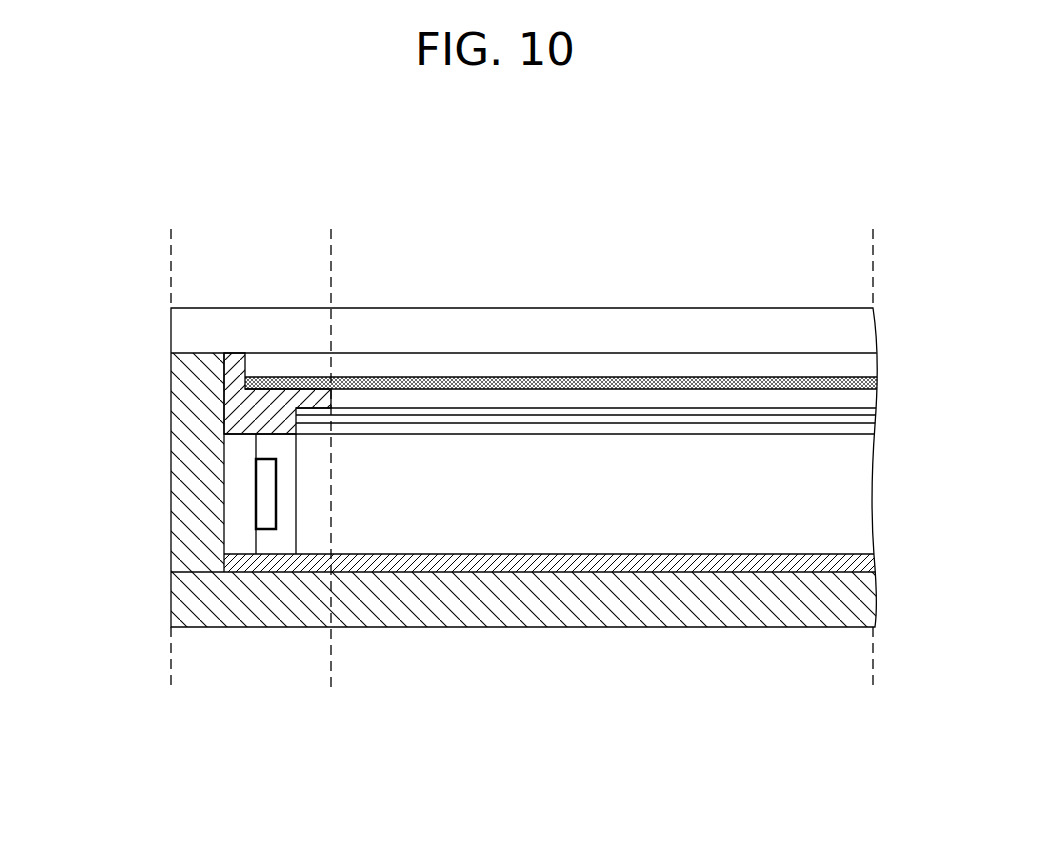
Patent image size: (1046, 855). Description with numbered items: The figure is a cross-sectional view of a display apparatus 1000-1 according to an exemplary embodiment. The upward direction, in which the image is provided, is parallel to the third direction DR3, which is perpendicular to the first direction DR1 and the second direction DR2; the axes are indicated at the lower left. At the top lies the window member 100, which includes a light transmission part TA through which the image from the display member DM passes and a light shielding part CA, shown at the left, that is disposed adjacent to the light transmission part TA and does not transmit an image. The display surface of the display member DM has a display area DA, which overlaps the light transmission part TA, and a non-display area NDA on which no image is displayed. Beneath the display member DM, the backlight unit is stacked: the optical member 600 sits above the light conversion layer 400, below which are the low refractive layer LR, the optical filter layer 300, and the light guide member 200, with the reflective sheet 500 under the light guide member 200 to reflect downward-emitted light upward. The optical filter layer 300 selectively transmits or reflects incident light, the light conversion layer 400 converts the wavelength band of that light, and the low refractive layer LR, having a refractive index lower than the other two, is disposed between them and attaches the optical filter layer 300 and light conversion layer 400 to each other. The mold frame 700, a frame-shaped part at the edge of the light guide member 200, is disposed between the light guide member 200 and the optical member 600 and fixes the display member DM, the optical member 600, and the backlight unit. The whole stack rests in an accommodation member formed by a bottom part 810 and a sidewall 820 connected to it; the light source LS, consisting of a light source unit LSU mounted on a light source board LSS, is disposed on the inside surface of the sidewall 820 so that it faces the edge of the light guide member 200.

The display apparatus 1000-1 is at (840, 209).
The window member 100 is at (866, 329).
The display member DM is at (866, 367).
The optical member 600 is at (866, 382).
The light conversion layer 400 is at (866, 410).
The low refractive layer LR is at (866, 420).
The optical filter layer 300 is at (866, 428).
The light guide member 200 is at (866, 497).
The reflective sheet 500 is at (866, 560).
The mold frame 700 is at (245, 413).
The sidewall 820 is at (190, 452).
The bottom part 810 is at (866, 598).
The light source LS is at (159, 494).
The light source unit LSU is at (262, 487).
The light source board LSS is at (240, 533).
The light shielding part CA is at (331, 241).
The light transmission part TA is at (873, 241).
The non-display area NDA is at (331, 675).
The display area DA is at (873, 675).
The first direction DR1 is at (70, 767).
The second direction DR2 is at (61, 784).
The third direction DR3 is at (62, 759).